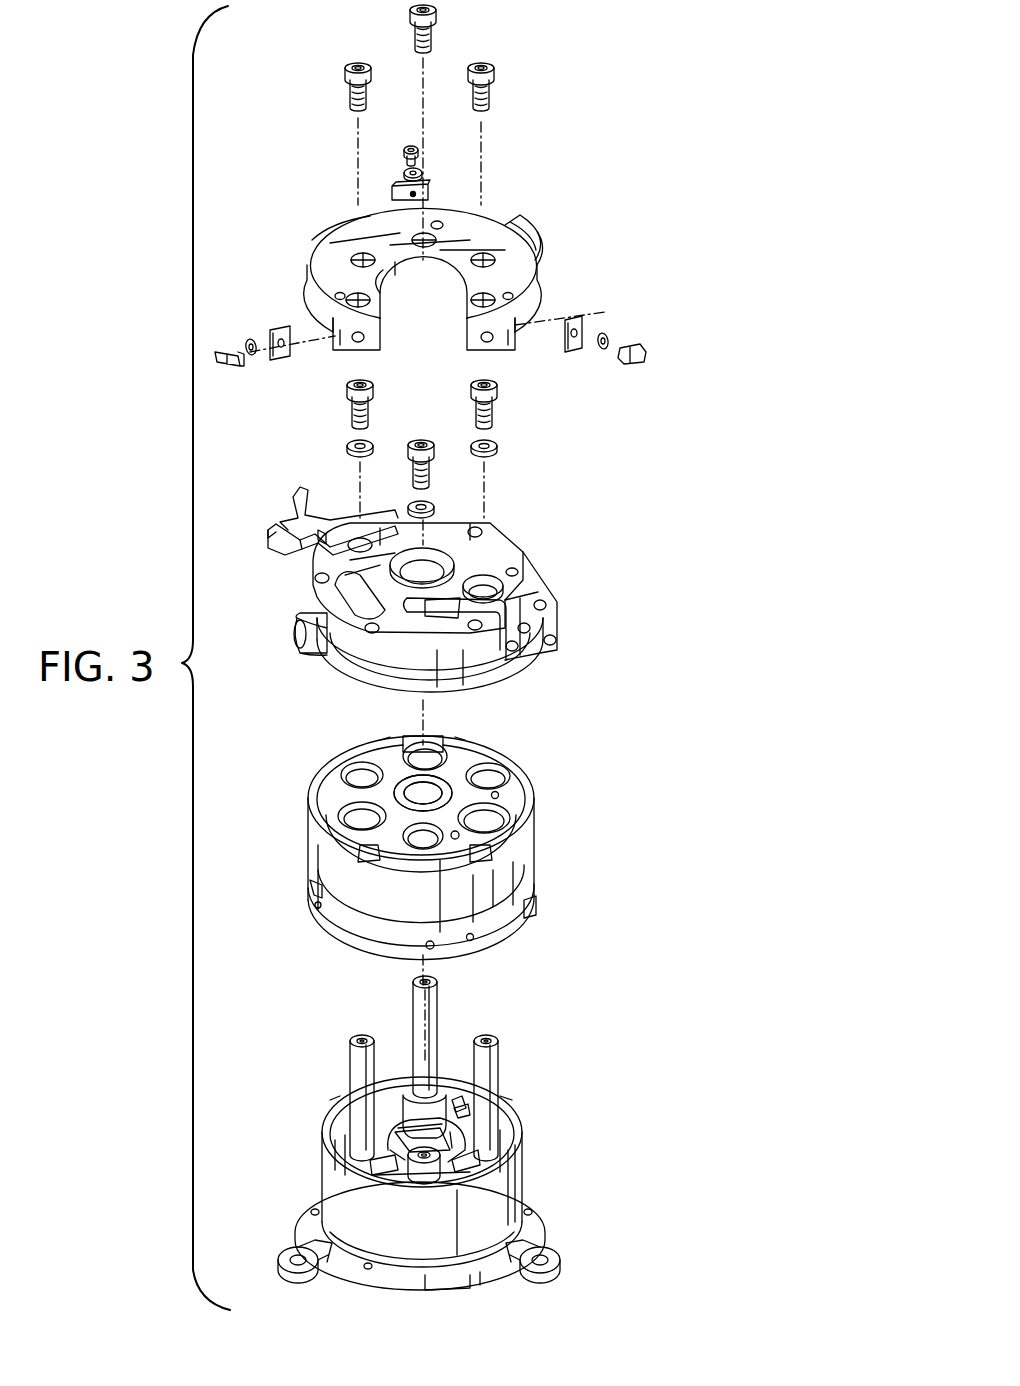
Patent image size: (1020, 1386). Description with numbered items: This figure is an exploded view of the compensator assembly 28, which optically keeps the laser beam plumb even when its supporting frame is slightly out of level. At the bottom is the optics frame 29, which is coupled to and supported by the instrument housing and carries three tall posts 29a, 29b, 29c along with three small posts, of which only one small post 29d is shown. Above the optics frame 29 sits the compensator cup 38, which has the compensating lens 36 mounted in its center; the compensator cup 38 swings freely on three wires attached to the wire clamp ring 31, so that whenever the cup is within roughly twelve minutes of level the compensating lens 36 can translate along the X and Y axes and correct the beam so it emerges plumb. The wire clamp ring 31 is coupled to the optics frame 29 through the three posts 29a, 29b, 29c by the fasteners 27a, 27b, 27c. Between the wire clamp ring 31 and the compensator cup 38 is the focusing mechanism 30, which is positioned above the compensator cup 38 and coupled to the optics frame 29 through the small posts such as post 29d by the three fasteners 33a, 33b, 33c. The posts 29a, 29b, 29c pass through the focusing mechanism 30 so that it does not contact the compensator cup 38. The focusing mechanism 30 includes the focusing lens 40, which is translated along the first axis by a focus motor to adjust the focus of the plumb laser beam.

The fastener 27a is at (350, 92).
The fastener 27b is at (435, 32).
The fastener 27c is at (492, 96).
The compensator assembly 28 is at (650, 949).
The optics frame 29 is at (508, 1175).
The post 29a is at (352, 1072).
The post 29b is at (437, 1008).
The post 29c is at (492, 1068).
The small post 29d is at (405, 1172).
The focusing mechanism 30 is at (543, 628).
The wire clamp ring 31 is at (515, 265).
The fastener 33a is at (432, 470).
The fastener 33b is at (352, 402).
The fastener 33c is at (492, 412).
The compensating lens 36 is at (435, 790).
The compensator cup 38 is at (535, 856).
The focusing lens 40 is at (315, 575).